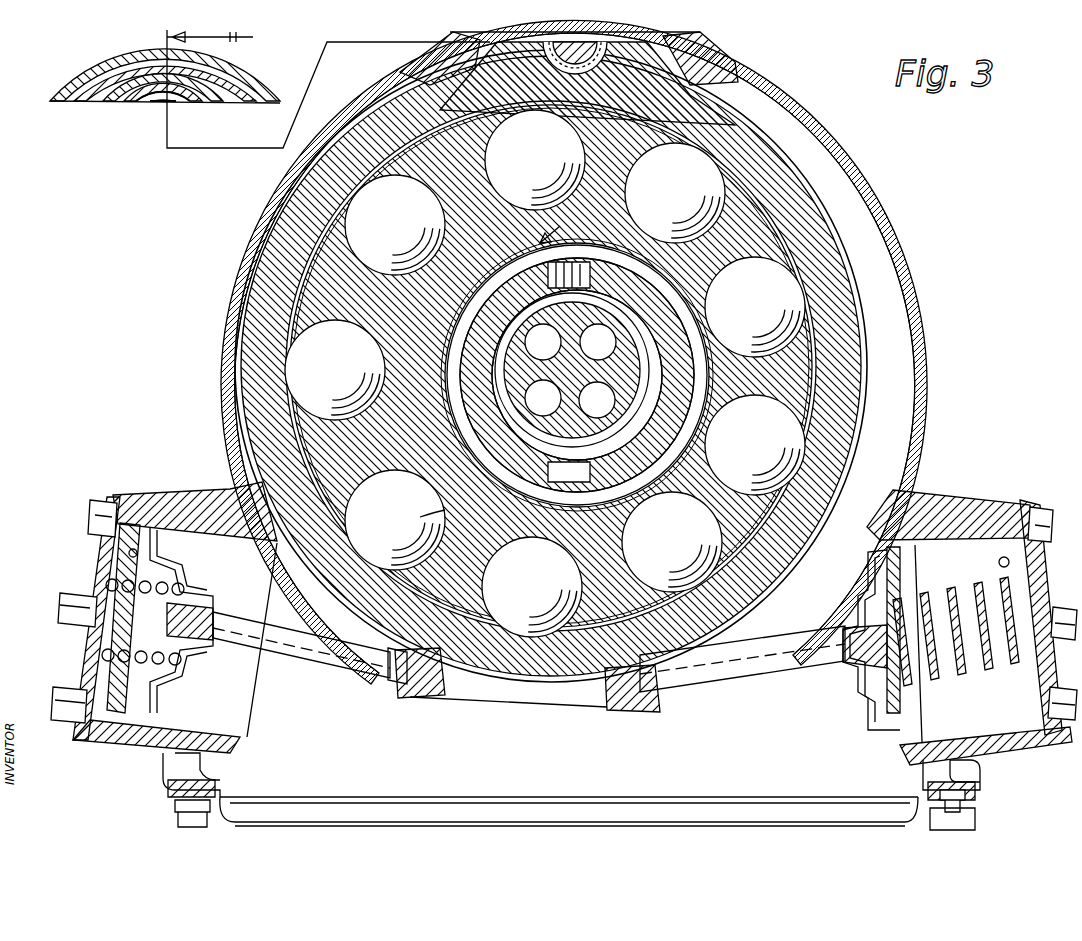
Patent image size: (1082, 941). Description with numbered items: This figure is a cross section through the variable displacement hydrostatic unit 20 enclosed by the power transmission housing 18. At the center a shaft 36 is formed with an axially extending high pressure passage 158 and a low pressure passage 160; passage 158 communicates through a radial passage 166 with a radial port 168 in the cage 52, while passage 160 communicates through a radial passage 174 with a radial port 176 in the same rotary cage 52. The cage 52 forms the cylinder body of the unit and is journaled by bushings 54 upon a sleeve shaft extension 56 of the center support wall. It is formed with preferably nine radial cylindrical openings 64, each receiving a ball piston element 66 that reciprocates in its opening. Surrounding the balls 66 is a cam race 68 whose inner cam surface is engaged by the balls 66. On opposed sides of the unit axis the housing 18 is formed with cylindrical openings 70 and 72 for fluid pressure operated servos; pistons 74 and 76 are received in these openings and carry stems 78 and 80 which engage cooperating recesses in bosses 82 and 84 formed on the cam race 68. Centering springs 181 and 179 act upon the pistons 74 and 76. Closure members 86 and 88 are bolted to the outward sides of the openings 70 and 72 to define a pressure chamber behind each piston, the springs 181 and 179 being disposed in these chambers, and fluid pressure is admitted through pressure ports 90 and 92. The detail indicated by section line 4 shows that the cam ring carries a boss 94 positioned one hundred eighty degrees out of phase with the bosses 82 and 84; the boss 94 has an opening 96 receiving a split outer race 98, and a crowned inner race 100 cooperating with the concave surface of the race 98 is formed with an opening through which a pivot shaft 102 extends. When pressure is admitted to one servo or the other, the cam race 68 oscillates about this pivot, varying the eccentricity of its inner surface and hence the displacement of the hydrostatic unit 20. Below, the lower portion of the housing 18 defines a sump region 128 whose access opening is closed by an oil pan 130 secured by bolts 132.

The section line 4 is at (364, 136).
The power transmission housing 18 is at (262, 246).
The hydrostatic unit 20 is at (340, 228).
The shaft 36 is at (790, 430).
The cage 52 is at (258, 276).
The bushings 54 is at (560, 537).
The sleeve shaft extension 56 is at (470, 368).
The radial cylindrical openings 64 is at (372, 396).
The ball piston element 66 is at (300, 346).
The cam race 68 is at (268, 302).
The cylindrical opening 70 is at (208, 740).
The cylindrical opening 72 is at (990, 745).
The piston 74 is at (183, 673).
The piston 76 is at (878, 704).
The stem 78 is at (268, 668).
The stem 80 is at (718, 694).
The boss 82 is at (420, 700).
The boss 84 is at (632, 714).
The closure member 86 is at (90, 650).
The closure member 88 is at (1035, 553).
The pressure port 90 is at (128, 553).
The pressure port 92 is at (998, 560).
The boss 94 is at (92, 86).
The opening 96 is at (140, 108).
The split outer race 98 is at (198, 105).
The crowned inner race 100 is at (205, 105).
The pivot shaft 102 is at (178, 110).
The sump region 128 is at (900, 780).
The oil pan 130 is at (522, 786).
The bolts 132 is at (170, 817).
The high pressure passage 158 is at (600, 358).
The low pressure passage 160 is at (378, 364).
The radial passage 166 is at (445, 372).
The radial port 168 is at (442, 224).
The radial passage 174 is at (407, 518).
The radial port 176 is at (425, 470).
The centering spring 179 is at (970, 680).
The centering spring 181 is at (178, 582).